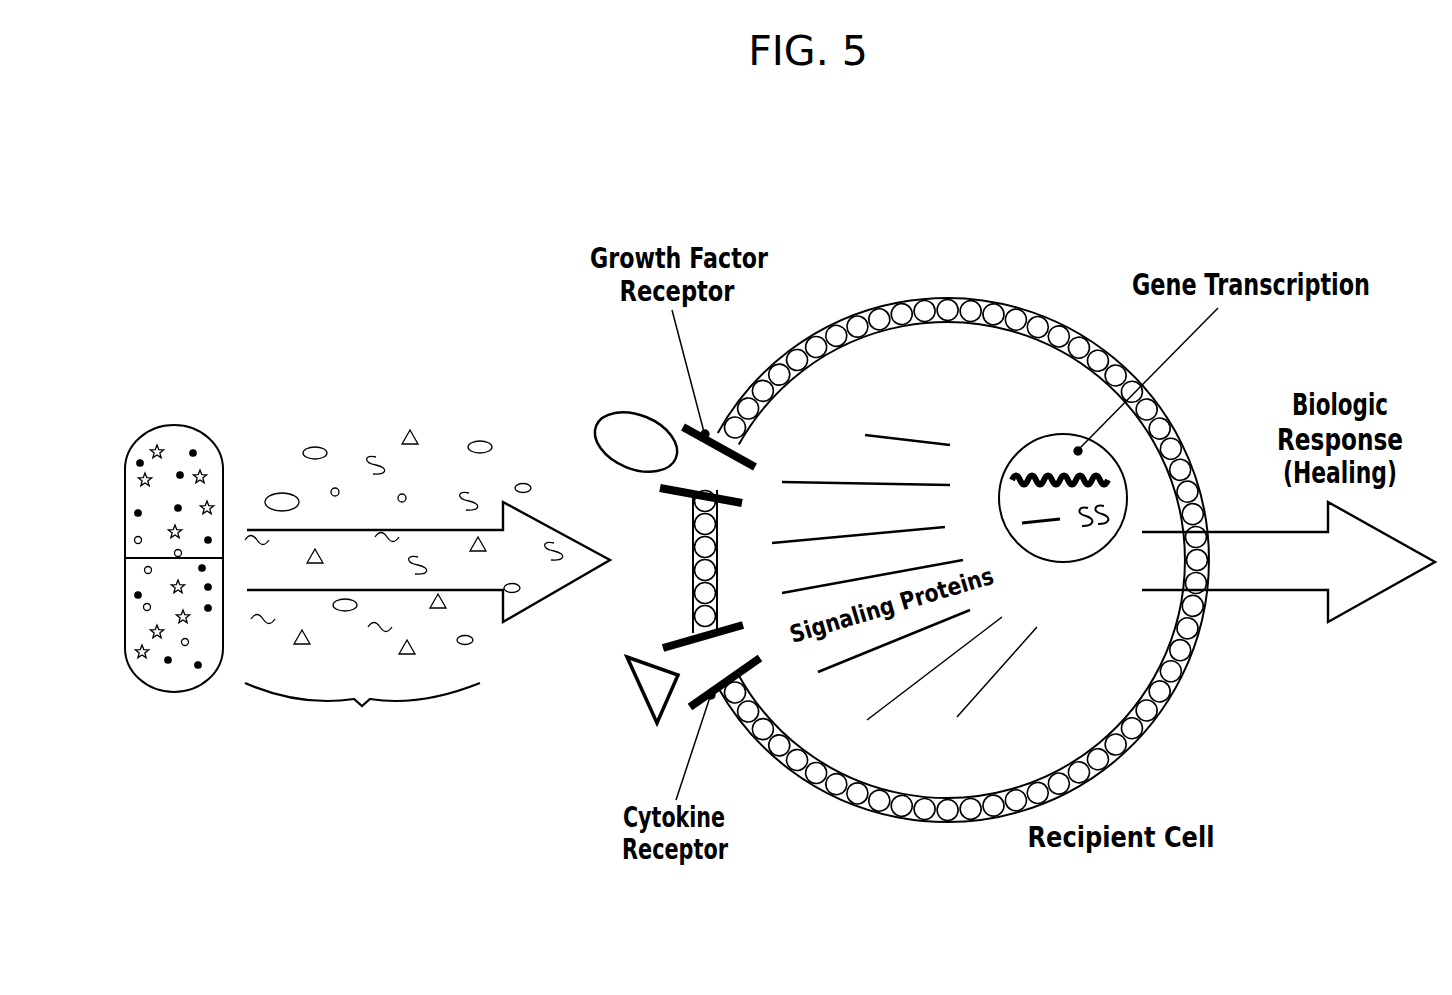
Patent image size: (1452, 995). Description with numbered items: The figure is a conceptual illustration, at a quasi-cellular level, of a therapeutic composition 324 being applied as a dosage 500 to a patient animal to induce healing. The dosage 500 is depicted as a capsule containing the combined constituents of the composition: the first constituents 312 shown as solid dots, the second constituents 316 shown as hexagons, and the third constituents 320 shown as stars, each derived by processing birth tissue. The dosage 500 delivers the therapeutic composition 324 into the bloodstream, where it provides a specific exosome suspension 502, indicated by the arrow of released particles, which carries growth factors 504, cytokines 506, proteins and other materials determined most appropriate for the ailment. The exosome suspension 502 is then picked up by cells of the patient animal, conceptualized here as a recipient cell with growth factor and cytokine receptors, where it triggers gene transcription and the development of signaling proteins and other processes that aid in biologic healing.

The dosage 500 is at (131, 436).
The first constituents 312 is at (136, 515).
The second constituents 316 is at (144, 608).
The third constituents 320 is at (141, 659).
The therapeutic composition 324 is at (141, 497).
The exosome suspension 502 is at (427, 588).
The growth factors 504 is at (318, 438).
The cytokines 506 is at (418, 418).